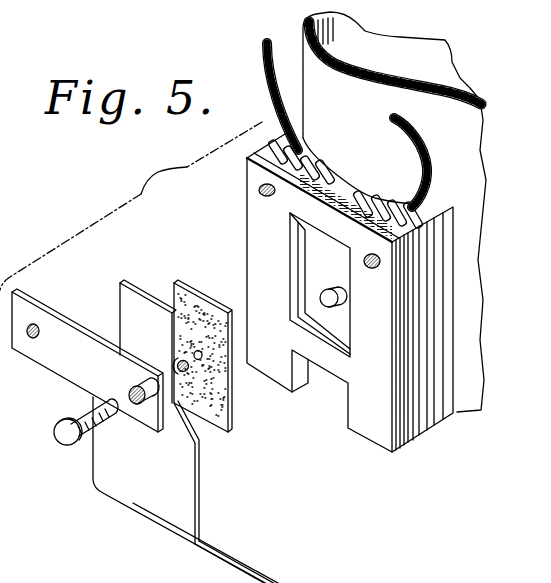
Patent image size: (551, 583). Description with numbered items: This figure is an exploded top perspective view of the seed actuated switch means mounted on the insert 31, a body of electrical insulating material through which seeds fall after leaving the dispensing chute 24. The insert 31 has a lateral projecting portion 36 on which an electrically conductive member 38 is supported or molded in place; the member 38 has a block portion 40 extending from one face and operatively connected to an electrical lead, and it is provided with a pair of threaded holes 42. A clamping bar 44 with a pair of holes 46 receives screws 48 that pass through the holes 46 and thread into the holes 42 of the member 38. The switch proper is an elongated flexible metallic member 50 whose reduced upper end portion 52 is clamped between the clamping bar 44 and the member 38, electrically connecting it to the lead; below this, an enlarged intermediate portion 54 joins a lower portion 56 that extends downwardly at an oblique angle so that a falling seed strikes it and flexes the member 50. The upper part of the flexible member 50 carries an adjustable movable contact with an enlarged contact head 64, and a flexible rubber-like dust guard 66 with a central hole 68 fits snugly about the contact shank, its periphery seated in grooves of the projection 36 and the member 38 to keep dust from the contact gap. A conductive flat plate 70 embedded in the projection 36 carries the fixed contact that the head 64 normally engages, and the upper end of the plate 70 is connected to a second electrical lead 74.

The dispensing chute 24 is at (152, 352).
The insert 31 is at (378, 70).
The lateral projecting portion 36 is at (425, 420).
The electrically conductive member 38 is at (352, 245).
The block portion 40 is at (317, 153).
The threaded holes 42 is at (264, 62).
The clamping bar 44 is at (63, 332).
The threaded holes 46 is at (33, 340).
The screws 48 is at (63, 445).
The elongated flexible metallic member 50 is at (219, 502).
The reduced upper end portion 52 is at (133, 303).
The enlarged intermediate portion 54 is at (187, 471).
The lower portion 56 is at (248, 562).
The enlarged contact head 64 is at (187, 373).
The flexible dust guard 66 is at (192, 305).
The central hole 68 is at (202, 357).
The flat plate 70 is at (378, 195).
The second electrical lead 74 is at (428, 148).